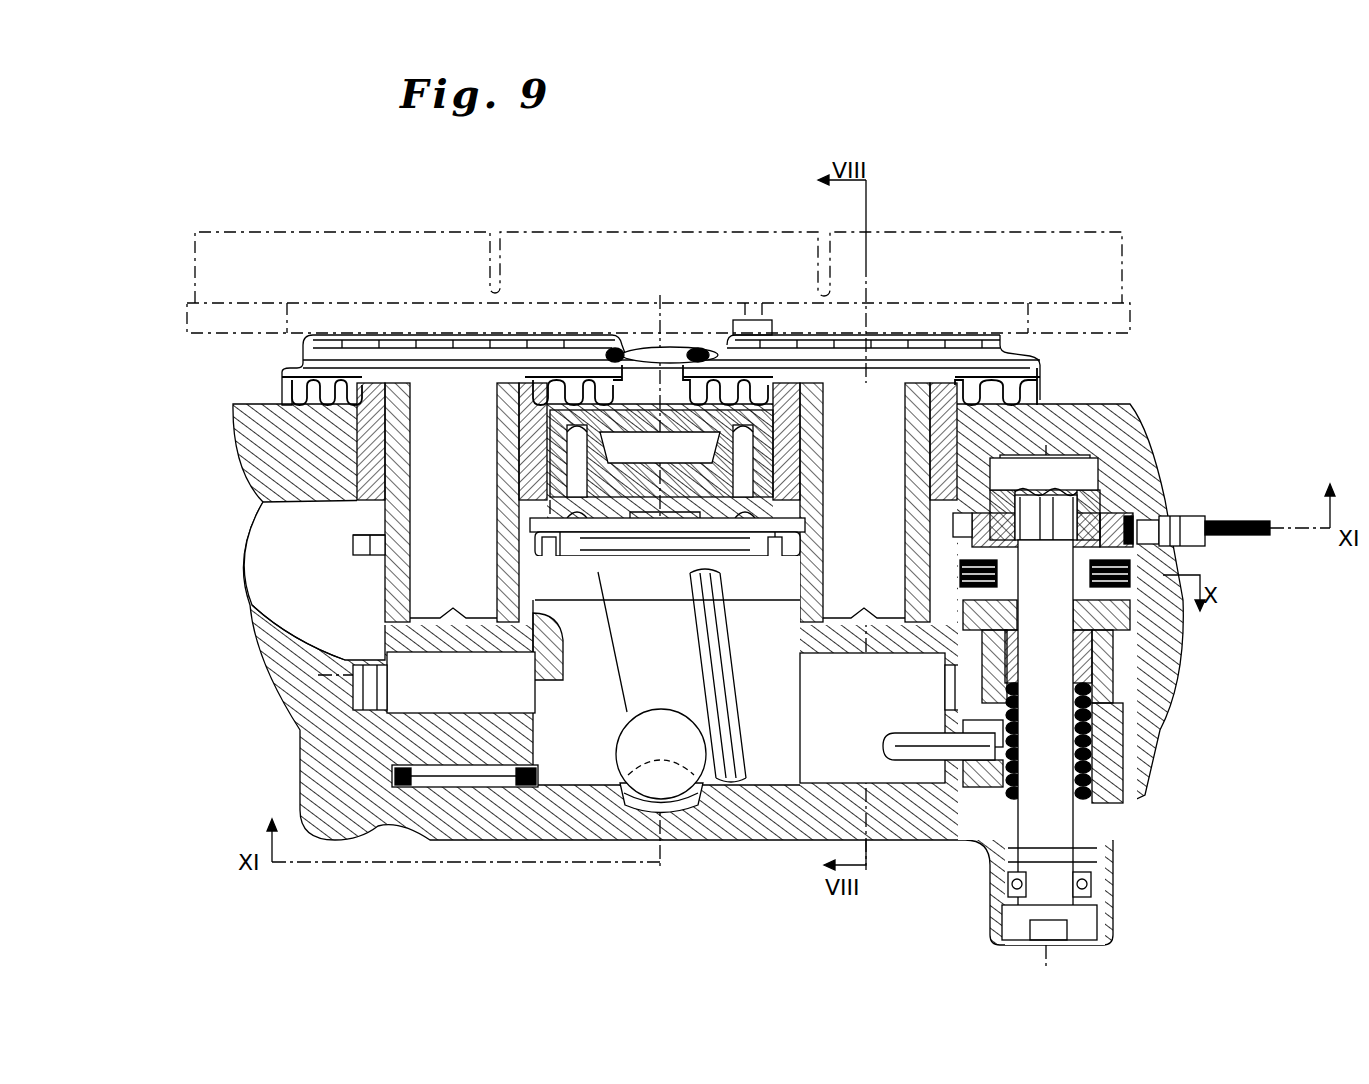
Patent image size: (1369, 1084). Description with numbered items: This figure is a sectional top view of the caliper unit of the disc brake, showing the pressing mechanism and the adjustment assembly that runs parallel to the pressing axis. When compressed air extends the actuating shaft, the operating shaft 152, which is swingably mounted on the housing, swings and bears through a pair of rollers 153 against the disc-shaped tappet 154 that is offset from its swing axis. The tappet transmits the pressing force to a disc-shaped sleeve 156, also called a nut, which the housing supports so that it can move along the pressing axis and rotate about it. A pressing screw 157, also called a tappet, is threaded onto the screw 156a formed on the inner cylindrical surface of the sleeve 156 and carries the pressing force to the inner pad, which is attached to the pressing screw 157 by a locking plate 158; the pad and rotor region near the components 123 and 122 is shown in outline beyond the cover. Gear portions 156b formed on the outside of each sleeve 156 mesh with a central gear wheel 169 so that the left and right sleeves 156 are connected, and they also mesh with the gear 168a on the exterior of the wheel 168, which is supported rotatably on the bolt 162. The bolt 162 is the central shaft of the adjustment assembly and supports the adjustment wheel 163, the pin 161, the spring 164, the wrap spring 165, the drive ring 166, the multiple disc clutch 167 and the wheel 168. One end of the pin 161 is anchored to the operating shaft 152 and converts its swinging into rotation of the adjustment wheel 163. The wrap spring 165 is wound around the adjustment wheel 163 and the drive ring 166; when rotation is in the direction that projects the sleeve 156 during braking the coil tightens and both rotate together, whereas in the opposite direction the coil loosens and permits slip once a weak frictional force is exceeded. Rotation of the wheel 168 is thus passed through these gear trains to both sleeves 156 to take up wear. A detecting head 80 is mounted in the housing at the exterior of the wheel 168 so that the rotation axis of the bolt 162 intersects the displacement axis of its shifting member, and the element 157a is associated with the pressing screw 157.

The upper plate 123 is at (1112, 241).
The lower plate 122 is at (1112, 304).
The locking plate 158 is at (1015, 352).
The pressing screw 157 is at (883, 393).
The sleeve 156 is at (925, 436).
The screw 156a is at (497, 480).
The bellows flange 157a is at (268, 550).
The gear portion 156b is at (353, 552).
The wheel 168 is at (1127, 520).
The gear 168a is at (1133, 540).
The detecting head 80 is at (1210, 522).
The multiple disc clutch 167 is at (1133, 590).
The drive ring 166 is at (1133, 620).
The wrap spring 165 is at (1117, 680).
The spring 164 is at (1093, 743).
The adjustment wheel 163 is at (1117, 773).
The bolt 162 is at (1060, 820).
The pin 161 is at (962, 750).
The tappet 154 is at (847, 643).
The operating shaft 152 is at (763, 720).
The gear wheel 169 is at (627, 547).
The roller 153 is at (512, 693).